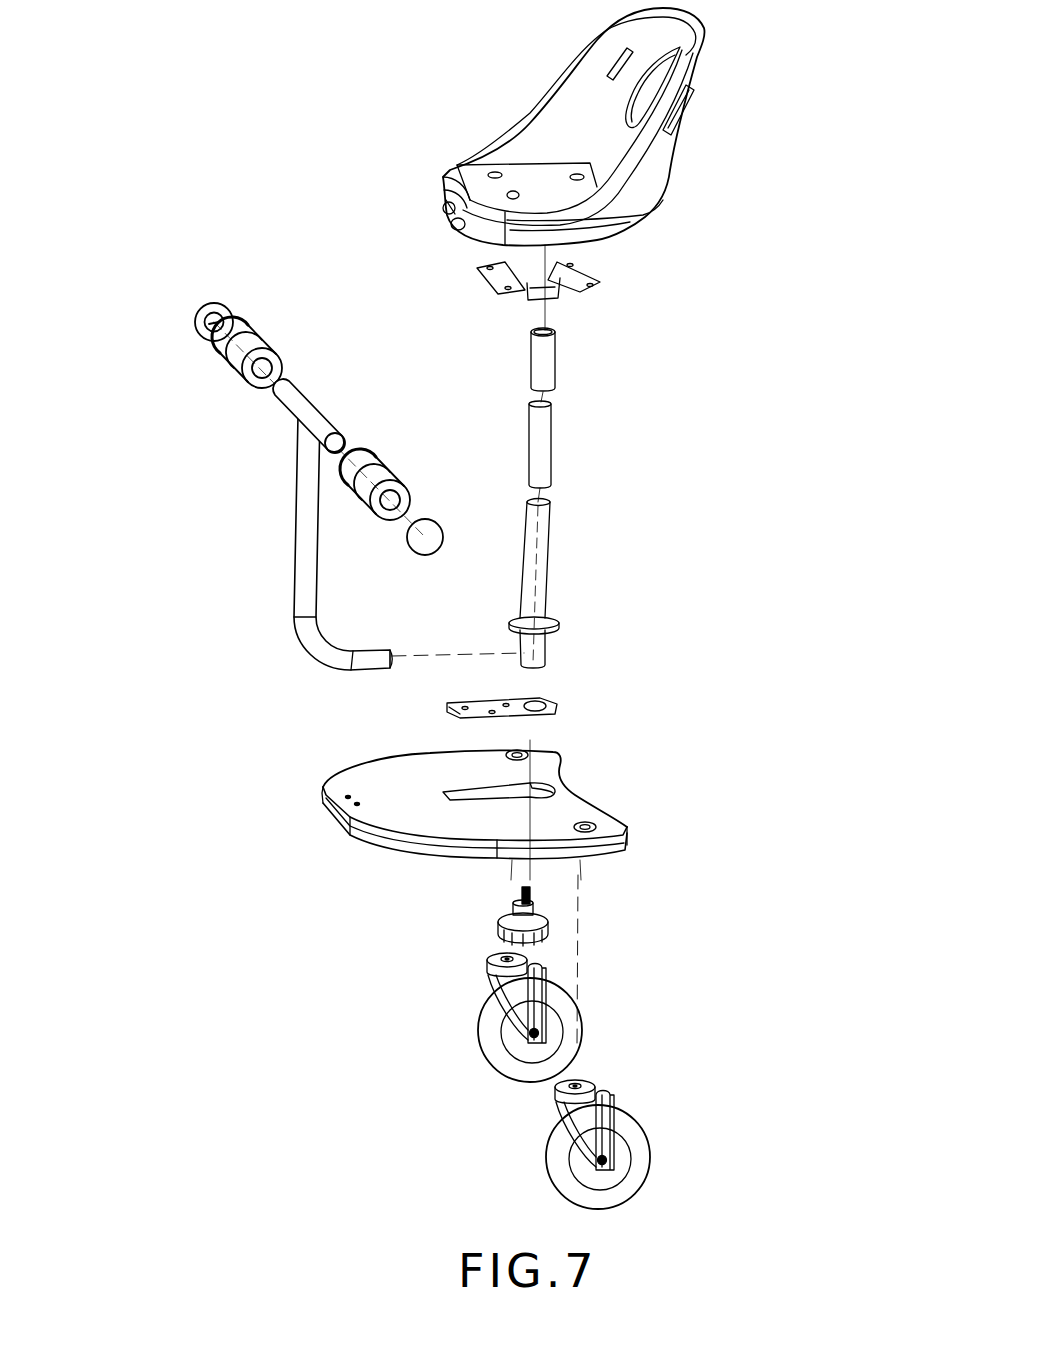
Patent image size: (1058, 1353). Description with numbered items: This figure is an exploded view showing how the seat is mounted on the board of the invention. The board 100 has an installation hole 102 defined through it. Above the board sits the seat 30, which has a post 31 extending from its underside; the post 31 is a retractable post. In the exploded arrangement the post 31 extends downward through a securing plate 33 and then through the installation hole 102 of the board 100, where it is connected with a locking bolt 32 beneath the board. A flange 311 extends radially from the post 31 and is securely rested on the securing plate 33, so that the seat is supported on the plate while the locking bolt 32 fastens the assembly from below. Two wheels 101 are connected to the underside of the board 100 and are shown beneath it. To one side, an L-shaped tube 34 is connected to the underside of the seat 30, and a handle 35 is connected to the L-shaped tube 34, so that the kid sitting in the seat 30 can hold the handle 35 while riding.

The seat 30 is at (645, 185).
The post 31 is at (547, 570).
The flange 311 is at (559, 624).
The locking bolt 32 is at (535, 902).
The securing plate 33 is at (550, 702).
The L-shaped tube 34 is at (298, 562).
The handle 35 is at (338, 420).
The board 100 is at (437, 768).
The wheels 101 is at (635, 1127).
The installation hole 102 is at (460, 793).